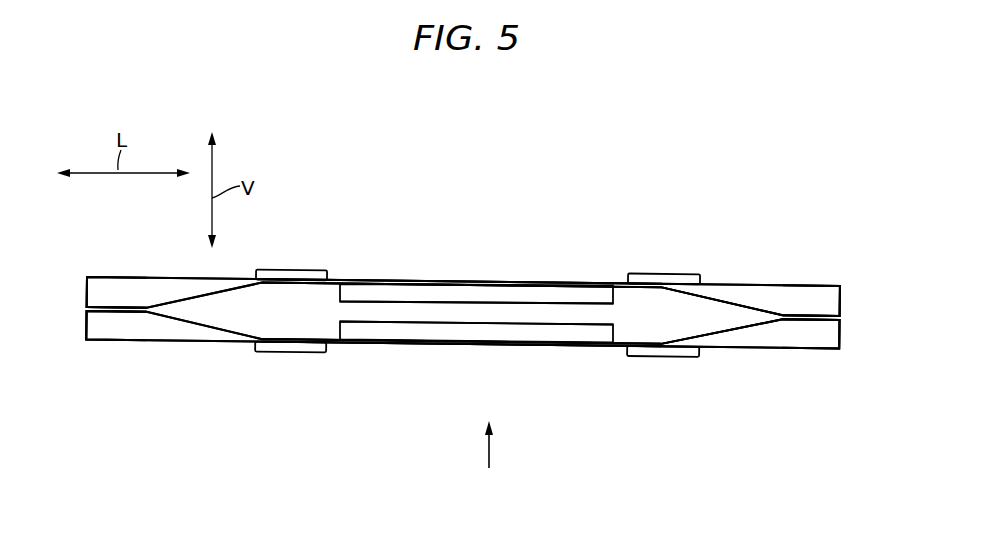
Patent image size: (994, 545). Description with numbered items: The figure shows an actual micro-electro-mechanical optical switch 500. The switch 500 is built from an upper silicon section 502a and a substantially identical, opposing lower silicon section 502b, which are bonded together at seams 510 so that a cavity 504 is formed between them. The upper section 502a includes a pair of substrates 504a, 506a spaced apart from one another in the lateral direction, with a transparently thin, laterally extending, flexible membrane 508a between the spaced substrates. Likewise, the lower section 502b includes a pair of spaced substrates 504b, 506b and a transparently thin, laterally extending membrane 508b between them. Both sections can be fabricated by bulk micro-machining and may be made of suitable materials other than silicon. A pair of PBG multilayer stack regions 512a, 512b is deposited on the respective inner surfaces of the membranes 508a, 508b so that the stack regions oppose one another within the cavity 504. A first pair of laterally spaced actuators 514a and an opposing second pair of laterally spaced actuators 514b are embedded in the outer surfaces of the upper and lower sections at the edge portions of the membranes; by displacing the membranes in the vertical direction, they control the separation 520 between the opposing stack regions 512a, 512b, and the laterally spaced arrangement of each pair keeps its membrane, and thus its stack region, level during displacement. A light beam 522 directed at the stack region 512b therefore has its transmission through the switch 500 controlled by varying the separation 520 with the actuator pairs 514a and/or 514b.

The micro-electro-mechanical optical switch 500 is at (491, 186).
The upper silicon section 502a is at (842, 305).
The lower silicon section 502b is at (842, 332).
The cavity 504 is at (703, 323).
The substrate 504a is at (813, 292).
The substrate 504b is at (808, 342).
The substrate 506a is at (122, 282).
The substrate 506b is at (122, 328).
The flexible membrane 508a is at (382, 280).
The membrane 508b is at (372, 343).
The seams 510 is at (85, 310).
The PBG multilayer stack region 512a is at (571, 295).
The PBG multilayer stack region 512b is at (573, 333).
The actuators 514a is at (291, 273).
The actuators 514b is at (290, 348).
The separation 520 is at (458, 312).
The light beam 522 is at (491, 454).